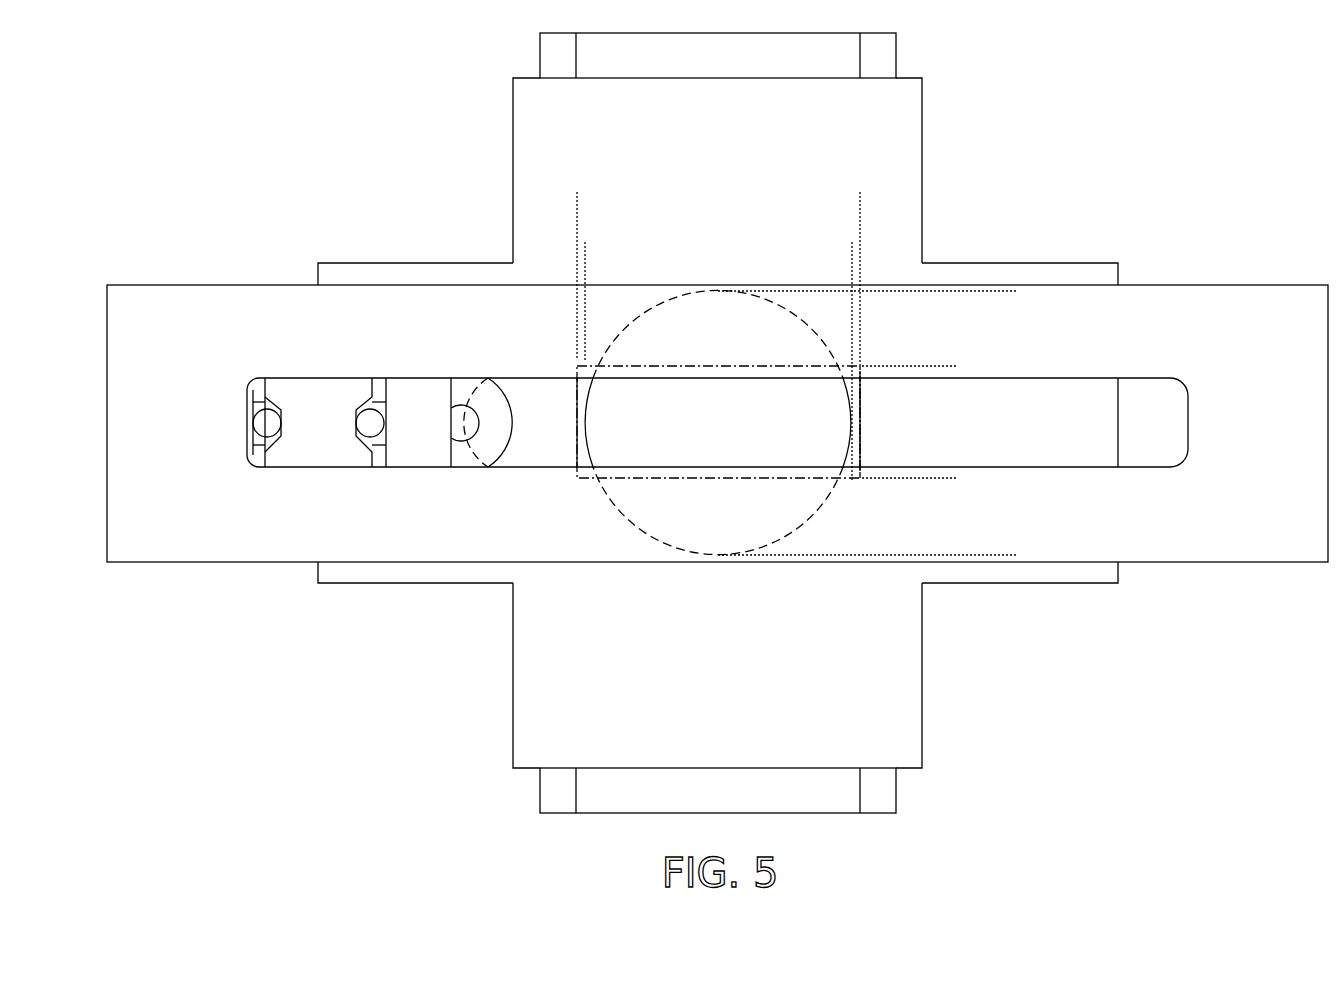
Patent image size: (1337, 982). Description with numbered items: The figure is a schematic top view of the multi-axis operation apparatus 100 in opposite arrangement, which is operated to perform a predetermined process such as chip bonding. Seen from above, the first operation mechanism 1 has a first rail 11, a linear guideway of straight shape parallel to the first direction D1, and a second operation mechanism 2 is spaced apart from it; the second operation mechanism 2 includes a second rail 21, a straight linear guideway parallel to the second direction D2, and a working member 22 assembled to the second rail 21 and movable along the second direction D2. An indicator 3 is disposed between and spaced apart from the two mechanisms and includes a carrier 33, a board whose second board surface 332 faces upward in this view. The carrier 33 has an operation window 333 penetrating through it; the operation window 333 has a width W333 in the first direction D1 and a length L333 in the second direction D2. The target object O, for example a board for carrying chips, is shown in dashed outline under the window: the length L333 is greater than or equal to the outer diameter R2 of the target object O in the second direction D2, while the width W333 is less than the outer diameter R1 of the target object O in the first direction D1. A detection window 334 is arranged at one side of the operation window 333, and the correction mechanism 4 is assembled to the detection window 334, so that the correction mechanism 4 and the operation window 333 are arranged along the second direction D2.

The multi-axis operation apparatus 100 is at (1250, 236).
The first operation mechanism 1 is at (713, 423).
The first rail 11 is at (555, 56).
The second operation mechanism 2 is at (717, 371).
The second rail 21 is at (203, 290).
The working member 22 is at (305, 378).
The indicator 3 is at (722, 423).
The carrier 33 is at (540, 224).
The second board surface 332 is at (1042, 264).
The operation window 333 is at (576, 420).
The detection window 334 is at (504, 398).
The correction mechanism 4 is at (467, 434).
The target object O is at (646, 534).
The length of the operation window L333 is at (858, 198).
The width of the operation window W333 is at (950, 476).
The outer diameter of the target object in the first direction R1 is at (1013, 553).
The outer diameter of the target object in the second direction R2 is at (850, 248).
The first direction D1 is at (1010, 712).
The second direction D2 is at (1227, 627).